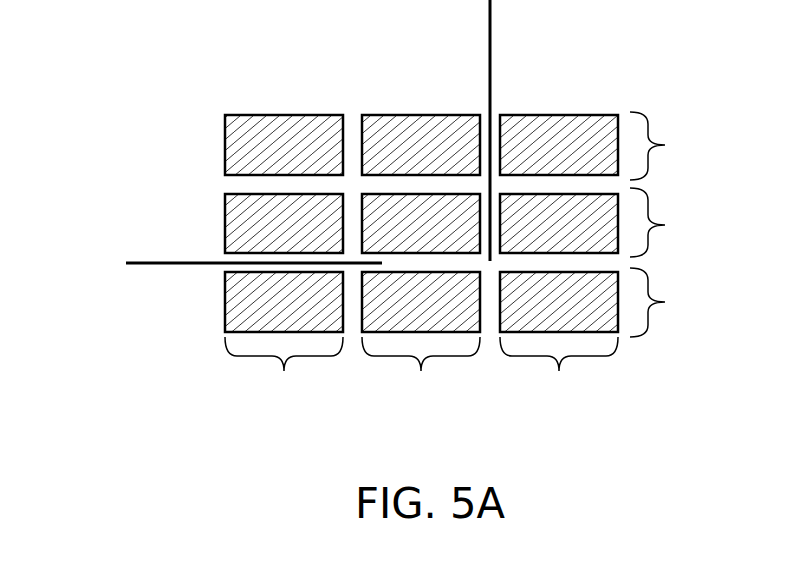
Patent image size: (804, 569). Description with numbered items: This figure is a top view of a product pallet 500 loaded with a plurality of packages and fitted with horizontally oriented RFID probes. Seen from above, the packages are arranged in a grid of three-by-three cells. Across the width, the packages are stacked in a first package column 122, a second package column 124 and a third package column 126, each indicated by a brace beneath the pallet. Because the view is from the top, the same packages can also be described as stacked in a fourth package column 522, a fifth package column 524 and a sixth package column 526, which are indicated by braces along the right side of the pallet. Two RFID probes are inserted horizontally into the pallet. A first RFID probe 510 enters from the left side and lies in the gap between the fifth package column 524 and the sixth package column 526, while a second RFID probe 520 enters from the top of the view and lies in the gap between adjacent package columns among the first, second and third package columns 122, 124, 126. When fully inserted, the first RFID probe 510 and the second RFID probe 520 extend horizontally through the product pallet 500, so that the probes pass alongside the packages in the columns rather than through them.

The product pallet 500 is at (391, 204).
The first RFID probe 510 is at (168, 263).
The second RFID probe 520 is at (490, 80).
The fourth package column 522 is at (677, 146).
The fifth package column 524 is at (677, 222).
The sixth package column 526 is at (676, 302).
The first package column 122 is at (284, 262).
The second package column 124 is at (421, 262).
The third package column 126 is at (559, 262).